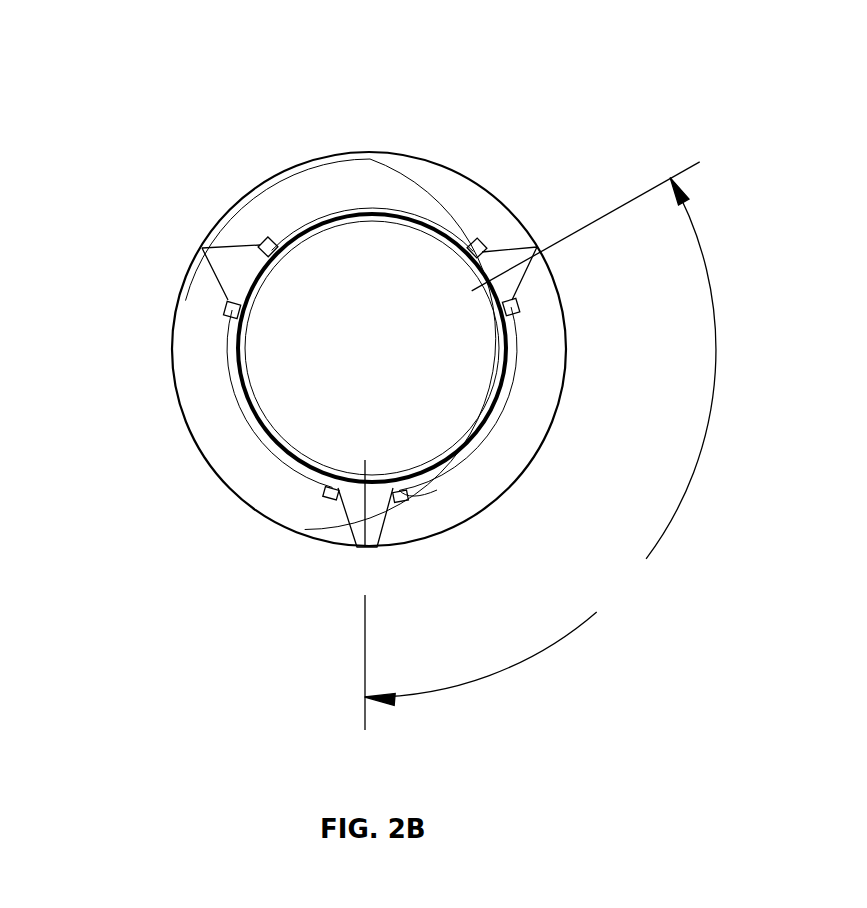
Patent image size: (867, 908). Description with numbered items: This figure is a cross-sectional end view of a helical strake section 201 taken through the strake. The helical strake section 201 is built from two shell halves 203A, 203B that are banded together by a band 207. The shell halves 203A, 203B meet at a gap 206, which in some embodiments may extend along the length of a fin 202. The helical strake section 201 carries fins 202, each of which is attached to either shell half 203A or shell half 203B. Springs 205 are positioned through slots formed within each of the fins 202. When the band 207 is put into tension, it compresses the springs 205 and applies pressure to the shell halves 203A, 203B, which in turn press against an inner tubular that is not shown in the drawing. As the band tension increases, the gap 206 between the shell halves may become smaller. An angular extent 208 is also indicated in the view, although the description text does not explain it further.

The helical strake section 201 is at (118, 89).
The fin 202 is at (200, 247).
The shell half 203A is at (307, 160).
The shell half 203B is at (466, 170).
The spring 205 is at (257, 243).
The gap 206 is at (373, 213).
The band 207 is at (224, 330).
The angular extent dimension 208 is at (540, 446).